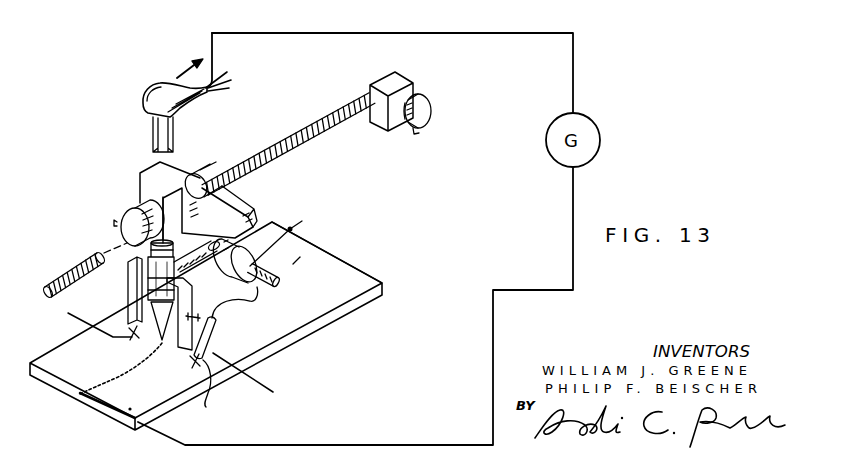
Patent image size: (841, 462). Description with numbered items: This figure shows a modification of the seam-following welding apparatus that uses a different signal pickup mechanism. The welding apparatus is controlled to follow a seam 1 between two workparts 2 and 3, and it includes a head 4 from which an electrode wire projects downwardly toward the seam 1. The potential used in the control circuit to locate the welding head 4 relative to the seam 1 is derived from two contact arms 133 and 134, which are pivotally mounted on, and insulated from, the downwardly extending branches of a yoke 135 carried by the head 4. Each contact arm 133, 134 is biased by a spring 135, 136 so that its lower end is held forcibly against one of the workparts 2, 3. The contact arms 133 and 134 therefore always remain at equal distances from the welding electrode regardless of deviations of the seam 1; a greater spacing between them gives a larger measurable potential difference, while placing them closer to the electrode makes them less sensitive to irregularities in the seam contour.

The seam 1 is at (295, 262).
The workpart 2 is at (281, 253).
The workpart 3 is at (324, 292).
The head 4 is at (186, 277).
The contact arm 133 is at (218, 366).
The contact arm 134 is at (130, 303).
The yoke 135 is at (242, 311).
The spring 136 is at (147, 278).